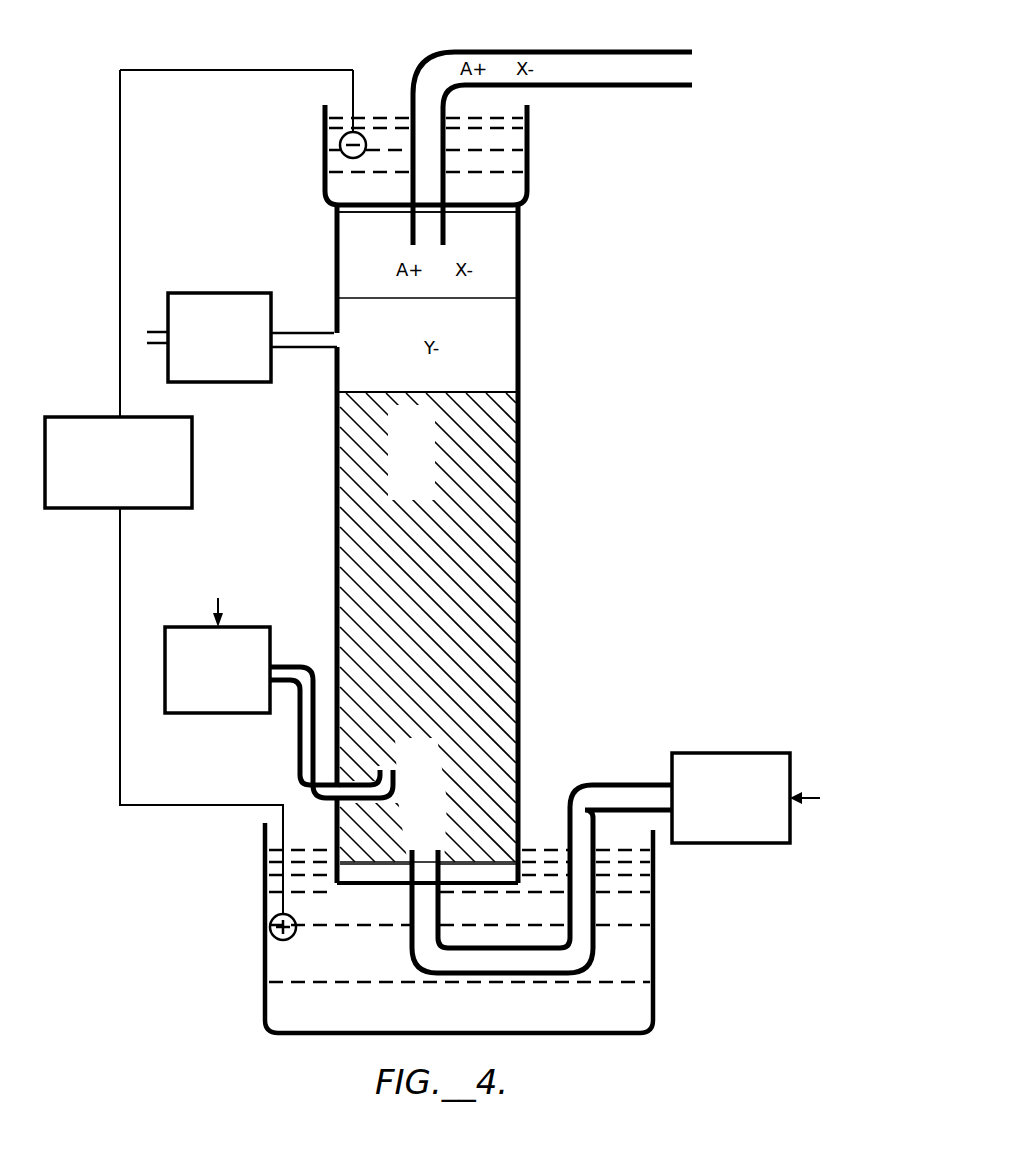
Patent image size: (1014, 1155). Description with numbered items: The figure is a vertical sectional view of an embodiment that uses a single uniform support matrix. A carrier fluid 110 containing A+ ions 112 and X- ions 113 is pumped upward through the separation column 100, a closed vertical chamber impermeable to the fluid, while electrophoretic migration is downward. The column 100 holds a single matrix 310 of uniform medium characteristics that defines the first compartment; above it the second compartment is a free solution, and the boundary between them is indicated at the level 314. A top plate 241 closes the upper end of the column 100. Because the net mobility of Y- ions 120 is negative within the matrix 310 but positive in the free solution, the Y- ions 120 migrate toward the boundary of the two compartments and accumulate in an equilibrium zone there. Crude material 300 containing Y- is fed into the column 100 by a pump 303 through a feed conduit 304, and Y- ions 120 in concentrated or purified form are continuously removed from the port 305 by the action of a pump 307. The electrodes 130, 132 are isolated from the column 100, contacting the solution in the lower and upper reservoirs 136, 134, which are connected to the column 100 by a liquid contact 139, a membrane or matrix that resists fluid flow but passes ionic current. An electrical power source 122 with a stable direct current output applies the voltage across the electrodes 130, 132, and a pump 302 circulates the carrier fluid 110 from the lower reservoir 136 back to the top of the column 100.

The separation chamber 100 is at (519, 542).
The carrier fluid 110 is at (643, 86).
The A+ ions 112 is at (456, 62).
The X- ions 113 is at (510, 63).
The Y- ions 120 is at (603, 794).
The electrical power source 122 is at (173, 417).
The electrode 130 is at (270, 923).
The electrode 132 is at (338, 145).
The reservoir 134 is at (520, 187).
The reservoir 136 is at (272, 1007).
The liquid contact 139 is at (375, 870).
The top plate 241 is at (340, 207).
The crude material 300 is at (255, 556).
The pump 302 is at (770, 753).
The pump 303 is at (245, 627).
The feed conduit 304 is at (300, 750).
The port 305 is at (333, 337).
The pump 307 is at (233, 293).
The matrix 310 is at (519, 432).
The interface level 314 is at (520, 300).